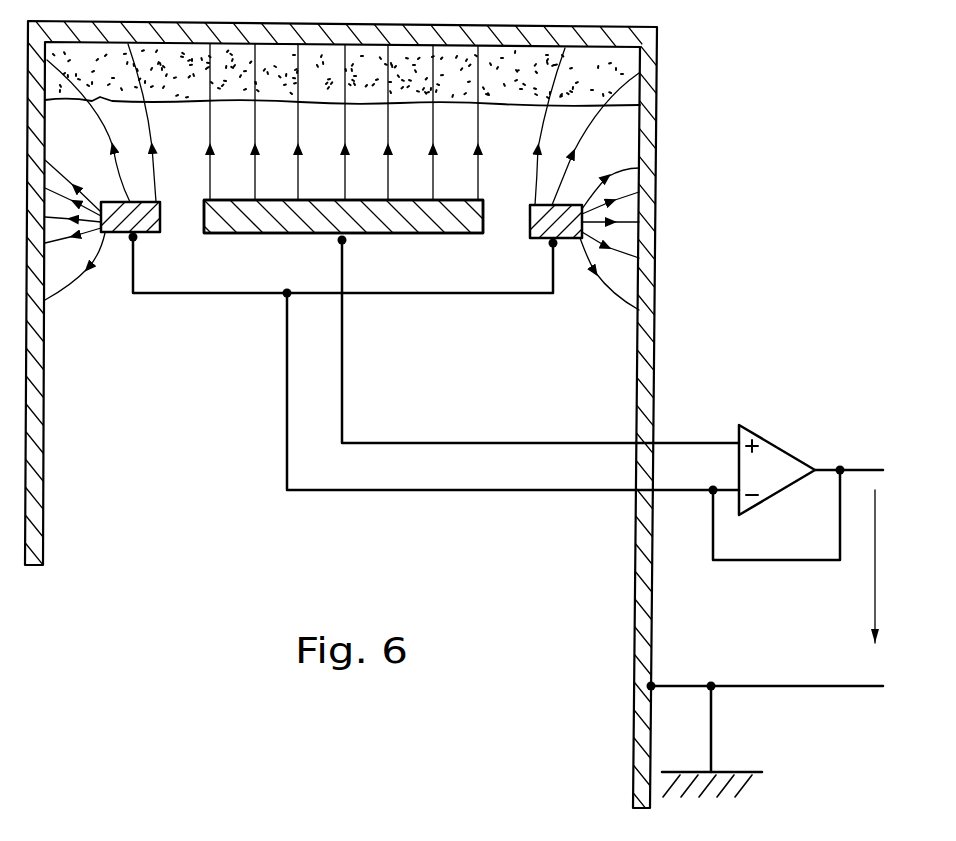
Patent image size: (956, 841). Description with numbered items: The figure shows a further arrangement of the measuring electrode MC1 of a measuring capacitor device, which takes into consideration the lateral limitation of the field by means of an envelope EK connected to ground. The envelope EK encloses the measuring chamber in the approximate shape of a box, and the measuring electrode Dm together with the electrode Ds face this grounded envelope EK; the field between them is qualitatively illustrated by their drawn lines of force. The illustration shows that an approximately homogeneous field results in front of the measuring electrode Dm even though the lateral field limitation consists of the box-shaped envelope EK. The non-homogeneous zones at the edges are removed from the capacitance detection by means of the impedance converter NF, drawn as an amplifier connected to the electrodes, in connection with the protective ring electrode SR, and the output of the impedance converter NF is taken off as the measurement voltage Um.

The envelope EK is at (647, 135).
The protective ring electrode SR is at (117, 233).
The measuring electrode Dm is at (298, 180).
The measuring electrode MC1 is at (432, 237).
The protective electrode Ds is at (533, 173).
The impedance converter NF is at (773, 460).
The measurement voltage Um is at (850, 566).